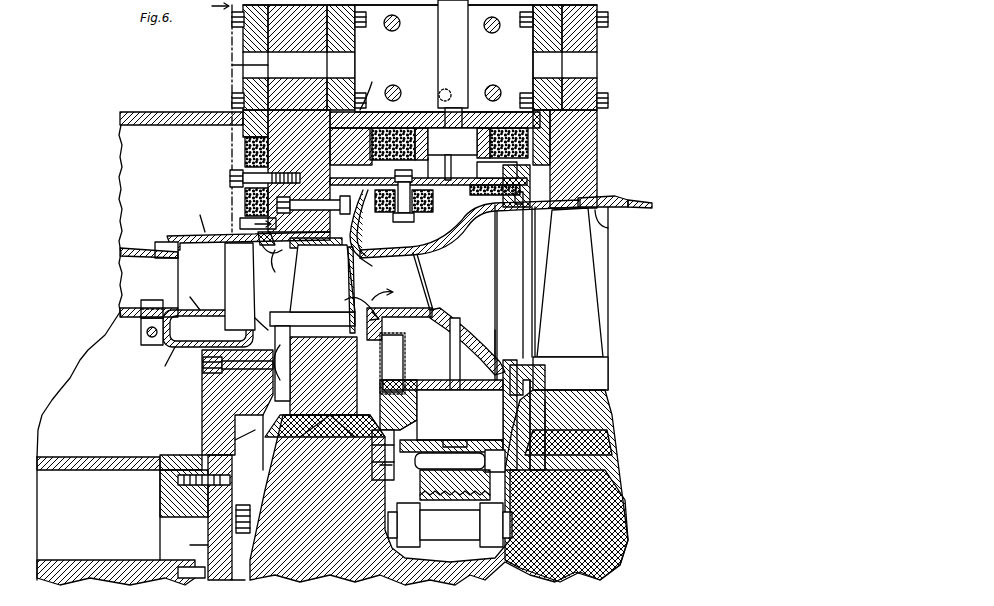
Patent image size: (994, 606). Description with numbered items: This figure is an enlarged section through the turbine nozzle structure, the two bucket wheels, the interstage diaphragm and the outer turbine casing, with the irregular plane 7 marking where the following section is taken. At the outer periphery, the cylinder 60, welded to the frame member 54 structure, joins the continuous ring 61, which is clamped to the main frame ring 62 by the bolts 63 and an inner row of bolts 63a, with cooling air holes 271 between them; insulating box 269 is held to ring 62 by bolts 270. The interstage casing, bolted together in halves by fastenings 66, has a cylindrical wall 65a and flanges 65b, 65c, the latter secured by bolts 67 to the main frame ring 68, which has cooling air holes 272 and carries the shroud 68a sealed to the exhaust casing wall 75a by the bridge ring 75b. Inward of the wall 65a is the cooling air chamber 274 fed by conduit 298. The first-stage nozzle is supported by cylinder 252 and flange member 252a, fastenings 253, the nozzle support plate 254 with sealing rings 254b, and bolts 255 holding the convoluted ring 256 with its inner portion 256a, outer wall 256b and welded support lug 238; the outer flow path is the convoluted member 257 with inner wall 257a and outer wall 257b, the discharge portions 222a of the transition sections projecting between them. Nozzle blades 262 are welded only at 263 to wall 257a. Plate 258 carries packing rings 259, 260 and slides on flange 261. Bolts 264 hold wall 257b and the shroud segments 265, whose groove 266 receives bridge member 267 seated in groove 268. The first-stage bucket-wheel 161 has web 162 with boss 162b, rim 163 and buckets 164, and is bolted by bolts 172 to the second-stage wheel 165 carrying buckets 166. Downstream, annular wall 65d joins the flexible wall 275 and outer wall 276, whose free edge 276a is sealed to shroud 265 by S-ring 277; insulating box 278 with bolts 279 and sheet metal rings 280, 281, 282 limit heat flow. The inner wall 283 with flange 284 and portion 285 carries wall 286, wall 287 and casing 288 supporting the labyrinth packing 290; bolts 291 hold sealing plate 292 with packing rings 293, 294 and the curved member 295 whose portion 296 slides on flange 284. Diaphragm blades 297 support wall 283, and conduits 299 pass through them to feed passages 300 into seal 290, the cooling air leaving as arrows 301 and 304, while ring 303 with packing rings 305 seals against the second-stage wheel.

The section plane 7 is at (238, 116).
The cylindrical frame member 54 is at (65, 560).
The cylinder 60 is at (178, 112).
The continuous ring 61 is at (260, 40).
The main frame ring 62 is at (302, 44).
The threaded fastenings 63 is at (232, 20).
The inner row of bolts 63a is at (224, 100).
The cylindrical wall 65a is at (403, 125).
The radially extending flange 65b is at (366, 27).
The radially extending flange 65c is at (532, 84).
The annular wall 65d is at (375, 88).
The threaded fastenings 66 is at (395, 86).
The bolts 67 is at (608, 18).
The main frame ring 68 is at (597, 42).
The shroud 68a is at (619, 220).
The exhaust casing wall 75a is at (640, 198).
The bridge ring 75b is at (600, 195).
The first stage turbine bucket-wheel 161 is at (265, 565).
The web portion 162 is at (439, 500).
The axially projecting boss 162b is at (243, 533).
The rim portion 163 is at (323, 376).
The buckets 164 is at (330, 291).
The second-stage turbine bucket-wheel 165 is at (590, 565).
The second-stage buckets 166 is at (570, 298).
The bolts 172 is at (450, 525).
The discharge portions of transition sections 222a is at (145, 258).
The support lug 238 is at (150, 345).
The axially extending cylinder 252 is at (97, 457).
The flange member 252a is at (160, 500).
The threaded fastenings 253 is at (190, 445).
The nozzle support plate 254 is at (208, 548).
The sealing rings 254b is at (230, 480).
The bolts 255 is at (203, 368).
The convoluted ring 256 is at (212, 336).
The inner portion 256a is at (157, 340).
The outer wall 256b is at (197, 298).
The convoluted member 257 is at (170, 235).
The inner wall 257a is at (208, 250).
The outer axially extending wall 257b is at (195, 216).
The annular plate 258 is at (250, 410).
The packing rings 259 is at (211, 491).
The packing rings 260 is at (292, 322).
The annular flange 261 is at (246, 327).
The nozzle blades 262 is at (239, 286).
The weld 263 is at (262, 232).
The bolts 264 is at (330, 212).
The shroud member 265 is at (355, 270).
The groove 266 is at (315, 248).
The bridge member 267 is at (272, 252).
The groove 268 is at (284, 271).
The annular box 269 is at (245, 155).
The bolts 270 is at (230, 178).
The cooling air holes 271 is at (236, 65).
The cooling air holes 272 is at (580, 62).
The cooling air chamber 274 is at (465, 148).
The axially extending wall 275 is at (500, 178).
The outer wall 276 is at (470, 222).
The free edge 276a is at (381, 265).
The S-shaped sealing ring 277 is at (358, 237).
The insulating box 278 is at (436, 254).
The bolts 279 is at (422, 212).
The sheet metal ring 280 is at (512, 210).
The sheet metal ring 281 is at (380, 162).
The sheet metal ring 282 is at (530, 138).
The annular wall 283 is at (452, 308).
The inwardly extending flange 284 is at (385, 325).
The inwardly extending portion 285 is at (510, 358).
The axially extending wall 286 is at (420, 380).
The inwardly extending wall 287 is at (405, 408).
The casing 288 is at (475, 440).
The labyrinth packing member 290 is at (480, 497).
The bolts 291 is at (383, 455).
The sealing plate member 292 is at (400, 392).
The packing rings 293 is at (386, 456).
The packing rings 294 is at (372, 375).
The reversely curved member 295 is at (405, 345).
The outer circumferential portion 296 is at (357, 304).
The diaphragm blades 297 is at (478, 270).
The conduit 298 is at (463, 59).
The conduits 299 is at (462, 352).
The passages 300 is at (460, 461).
The arrow 301 is at (458, 377).
The circumferential portion 303 is at (530, 395).
The arrow 304 is at (548, 343).
The packing rings 305 is at (522, 372).